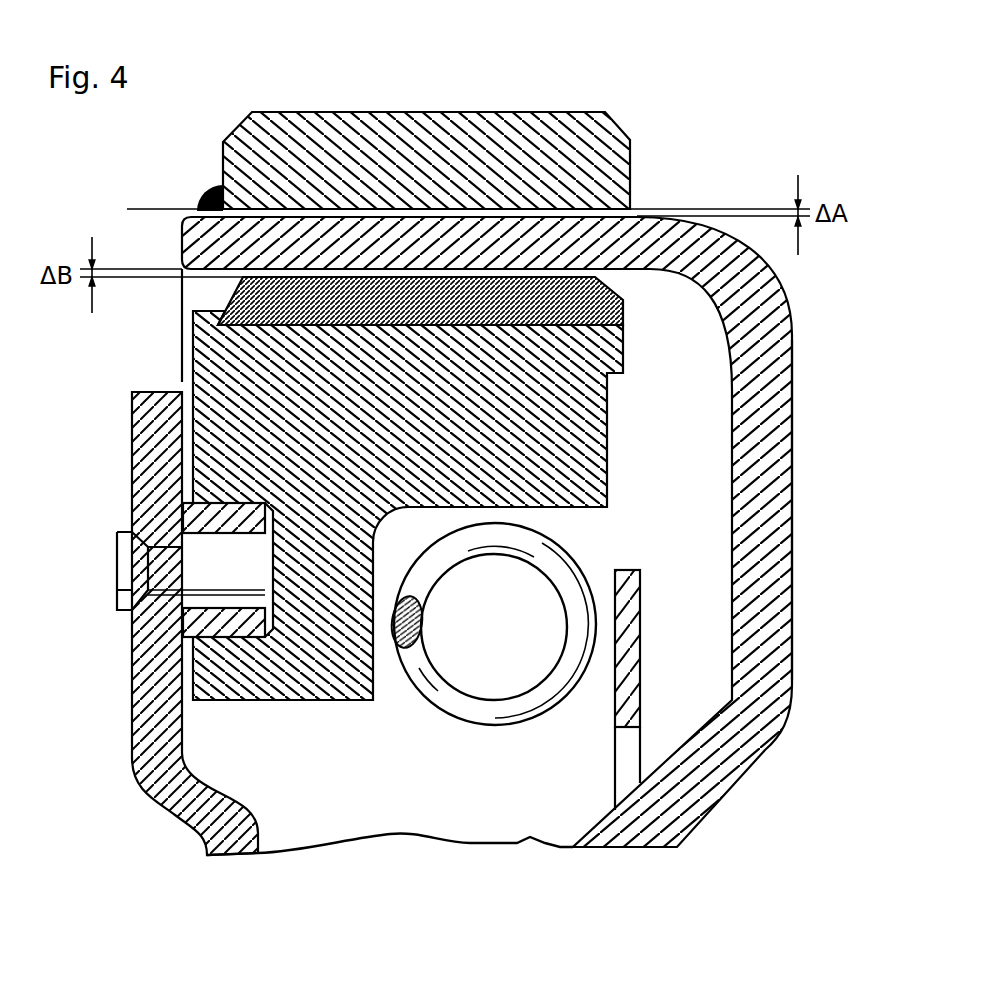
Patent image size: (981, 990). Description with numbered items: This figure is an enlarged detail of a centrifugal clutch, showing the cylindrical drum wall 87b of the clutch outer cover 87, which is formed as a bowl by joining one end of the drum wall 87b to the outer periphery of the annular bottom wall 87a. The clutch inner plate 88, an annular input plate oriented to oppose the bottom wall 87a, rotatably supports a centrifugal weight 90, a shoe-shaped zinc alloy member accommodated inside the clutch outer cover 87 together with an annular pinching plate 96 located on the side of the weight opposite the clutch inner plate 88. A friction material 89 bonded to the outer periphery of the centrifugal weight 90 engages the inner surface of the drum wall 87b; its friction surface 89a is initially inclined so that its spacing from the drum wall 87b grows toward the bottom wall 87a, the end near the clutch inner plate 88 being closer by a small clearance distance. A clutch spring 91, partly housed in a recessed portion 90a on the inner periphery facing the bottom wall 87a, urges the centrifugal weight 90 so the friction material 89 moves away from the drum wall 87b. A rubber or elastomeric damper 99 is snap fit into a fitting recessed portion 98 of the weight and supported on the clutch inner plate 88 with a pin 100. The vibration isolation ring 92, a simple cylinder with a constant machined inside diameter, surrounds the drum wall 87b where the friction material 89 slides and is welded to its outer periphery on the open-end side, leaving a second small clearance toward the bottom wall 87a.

The clutch outer cover 87 is at (793, 630).
The bottom wall 87a is at (780, 522).
The drum wall 87b is at (470, 232).
The clutch inner plate 88 is at (160, 768).
The friction material 89 is at (627, 310).
The friction surface 89a is at (378, 272).
The centrifugal weight 90 is at (607, 408).
The recessed portion 90a is at (550, 505).
The clutch spring 91 is at (505, 710).
The vibration isolation ring 92 is at (547, 120).
The annular pinching plate 96 is at (638, 612).
The fitting recessed portion 98 is at (227, 627).
The damper 99 is at (183, 523).
The pin 100 is at (123, 575).